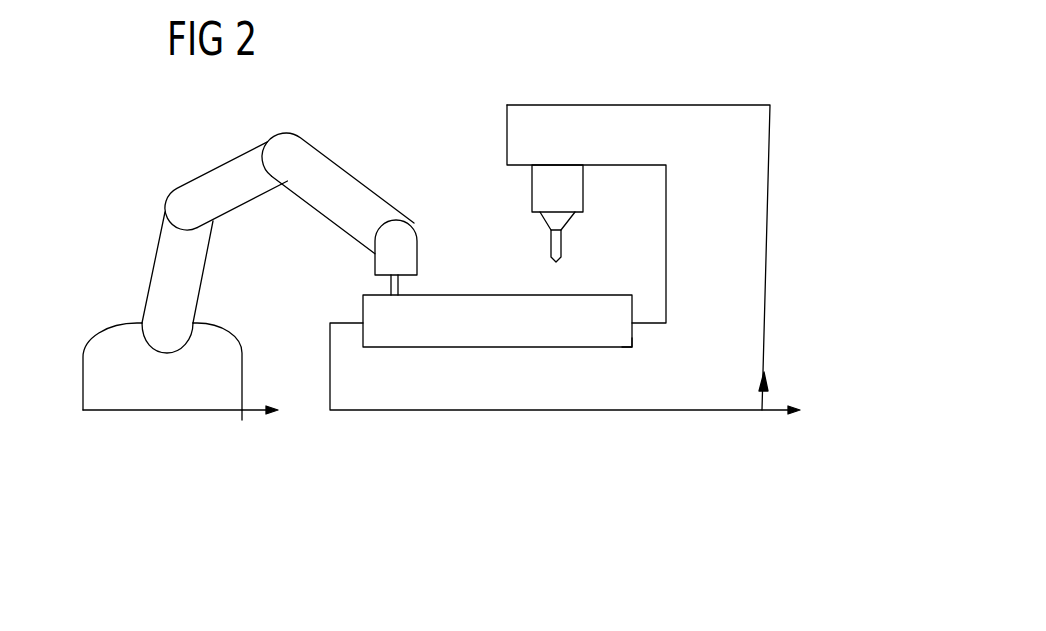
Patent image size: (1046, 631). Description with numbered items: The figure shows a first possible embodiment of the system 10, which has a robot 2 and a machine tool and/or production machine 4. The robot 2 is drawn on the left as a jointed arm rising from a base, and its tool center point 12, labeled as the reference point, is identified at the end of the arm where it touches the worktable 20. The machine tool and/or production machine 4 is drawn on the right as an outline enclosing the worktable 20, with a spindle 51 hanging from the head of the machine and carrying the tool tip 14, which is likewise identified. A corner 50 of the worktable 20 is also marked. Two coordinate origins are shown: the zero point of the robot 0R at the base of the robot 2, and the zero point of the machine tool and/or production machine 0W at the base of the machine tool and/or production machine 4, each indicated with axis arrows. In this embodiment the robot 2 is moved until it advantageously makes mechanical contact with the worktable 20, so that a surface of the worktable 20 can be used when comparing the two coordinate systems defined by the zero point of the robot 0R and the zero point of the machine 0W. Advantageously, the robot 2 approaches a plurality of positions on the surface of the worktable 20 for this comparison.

The system 10 is at (142, 93).
The robot 2 is at (150, 258).
The tool center point 12 is at (402, 284).
The worktable 20 is at (503, 295).
The tool tip 14 is at (562, 241).
The spindle 51 is at (556, 263).
The machine tool and/or production machine 4 is at (768, 210).
The corner 50 is at (632, 346).
The zero point of the robot 0R is at (240, 410).
The zero point of the machine tool and/or production machine 0W is at (763, 410).